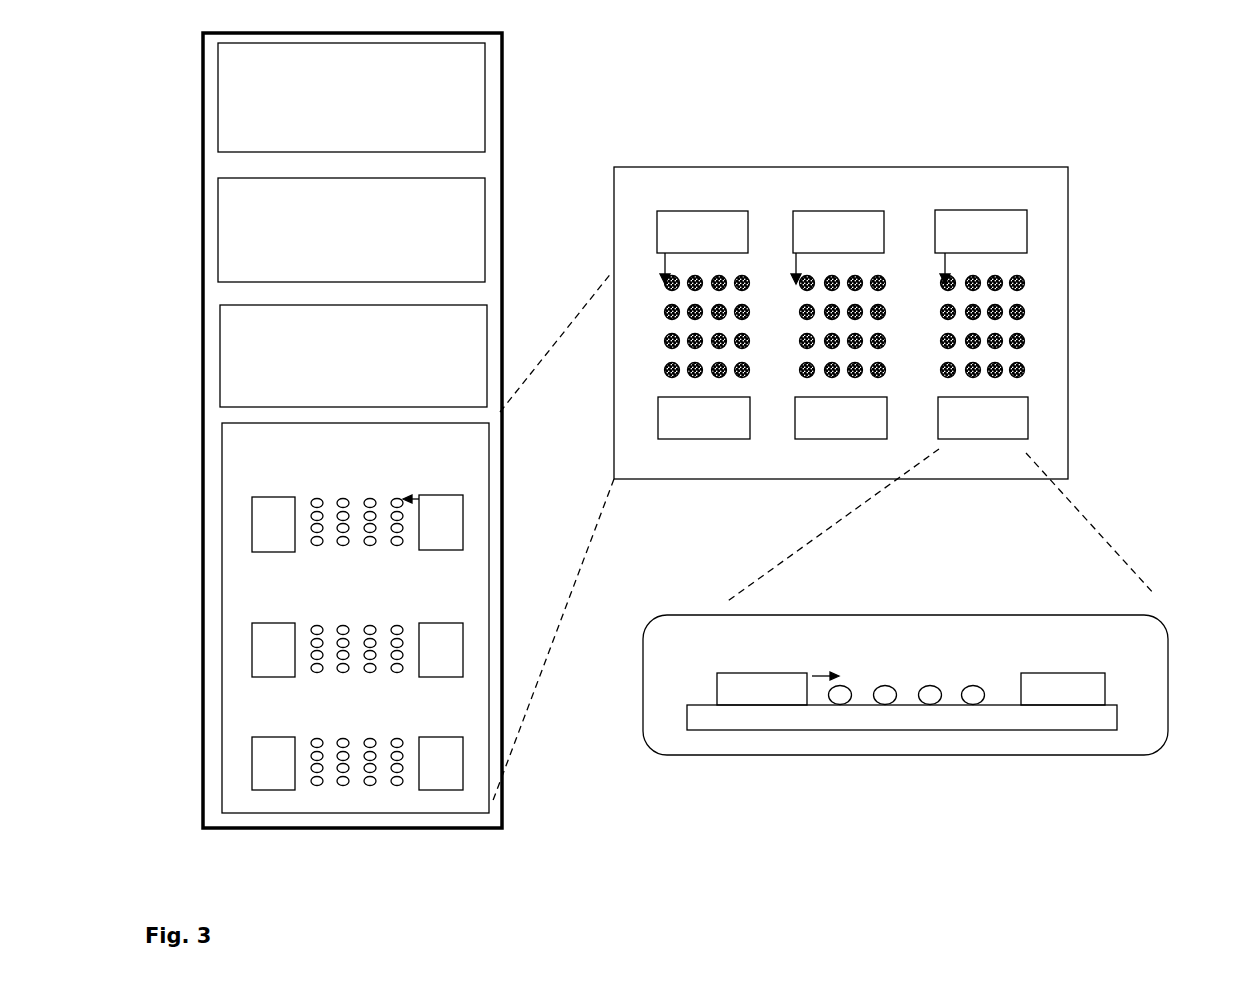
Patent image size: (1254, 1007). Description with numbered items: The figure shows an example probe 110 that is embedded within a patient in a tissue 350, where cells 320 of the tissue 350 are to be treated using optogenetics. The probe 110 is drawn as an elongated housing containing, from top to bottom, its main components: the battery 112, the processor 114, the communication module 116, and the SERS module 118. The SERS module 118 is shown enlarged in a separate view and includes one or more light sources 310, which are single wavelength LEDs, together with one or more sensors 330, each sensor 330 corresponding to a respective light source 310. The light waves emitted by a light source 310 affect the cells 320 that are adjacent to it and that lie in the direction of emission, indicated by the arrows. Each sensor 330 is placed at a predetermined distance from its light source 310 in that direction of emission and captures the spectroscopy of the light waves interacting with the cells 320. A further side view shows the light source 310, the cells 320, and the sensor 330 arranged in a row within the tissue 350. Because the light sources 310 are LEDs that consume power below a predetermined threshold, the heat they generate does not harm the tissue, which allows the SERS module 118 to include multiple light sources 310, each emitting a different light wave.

The probe 110 is at (202, 148).
The battery 112 is at (326, 104).
The processor 114 is at (326, 244).
The communication module 116 is at (332, 356).
The SERS module 118 is at (307, 472).
The light source 310 is at (1079, 198).
The cells 320 is at (1079, 268).
The sensor 330 is at (1079, 381).
The tissue 350 is at (792, 751).